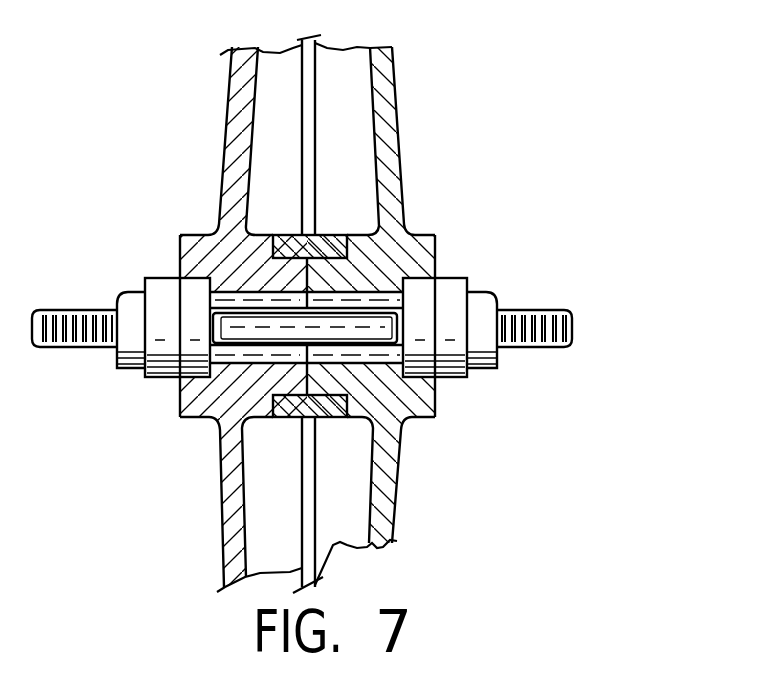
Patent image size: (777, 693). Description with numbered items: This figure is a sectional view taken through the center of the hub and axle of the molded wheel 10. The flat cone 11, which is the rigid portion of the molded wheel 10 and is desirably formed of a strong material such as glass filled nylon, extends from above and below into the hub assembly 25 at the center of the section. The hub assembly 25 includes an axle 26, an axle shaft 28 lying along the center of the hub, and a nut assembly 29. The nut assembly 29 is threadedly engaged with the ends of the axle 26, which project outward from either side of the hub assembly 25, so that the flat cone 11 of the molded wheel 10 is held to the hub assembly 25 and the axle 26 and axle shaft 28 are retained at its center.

The molded wheel 10 is at (433, 93).
The flat cone 11 is at (224, 166).
The hub assembly 25 is at (436, 244).
The axle 26 is at (572, 315).
The axle shaft 28 is at (357, 320).
The nut assembly 29 is at (120, 370).